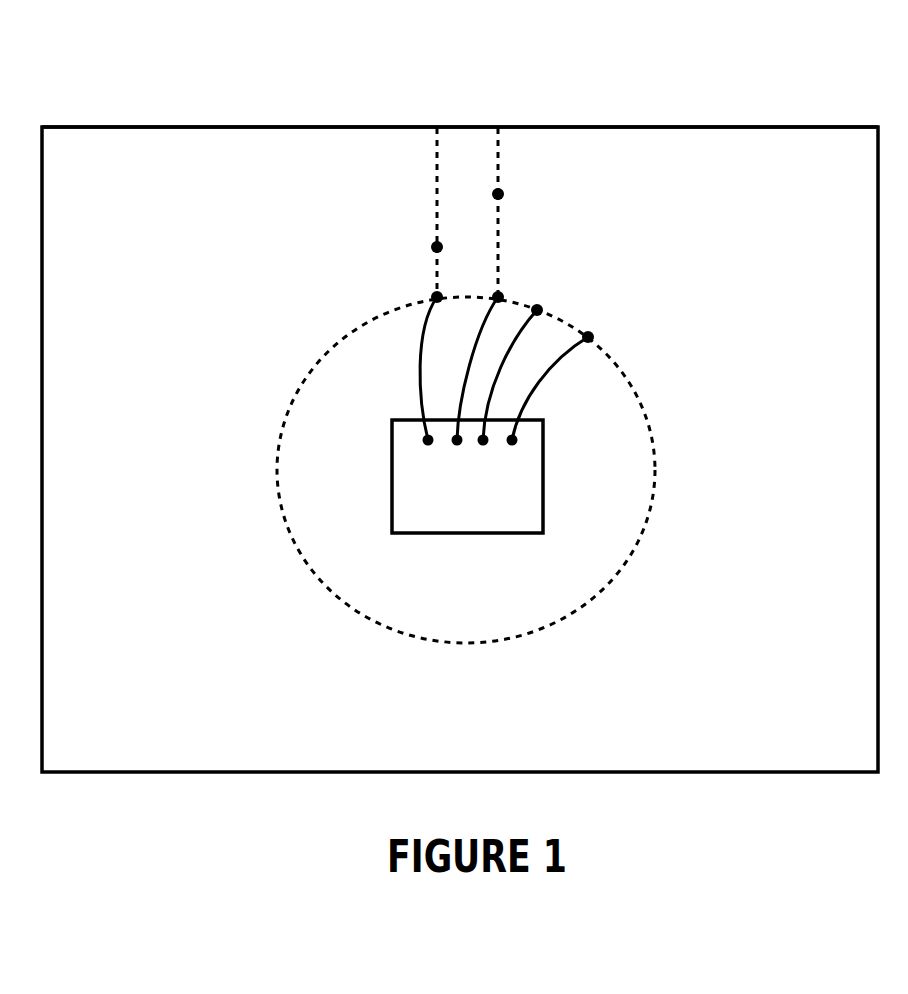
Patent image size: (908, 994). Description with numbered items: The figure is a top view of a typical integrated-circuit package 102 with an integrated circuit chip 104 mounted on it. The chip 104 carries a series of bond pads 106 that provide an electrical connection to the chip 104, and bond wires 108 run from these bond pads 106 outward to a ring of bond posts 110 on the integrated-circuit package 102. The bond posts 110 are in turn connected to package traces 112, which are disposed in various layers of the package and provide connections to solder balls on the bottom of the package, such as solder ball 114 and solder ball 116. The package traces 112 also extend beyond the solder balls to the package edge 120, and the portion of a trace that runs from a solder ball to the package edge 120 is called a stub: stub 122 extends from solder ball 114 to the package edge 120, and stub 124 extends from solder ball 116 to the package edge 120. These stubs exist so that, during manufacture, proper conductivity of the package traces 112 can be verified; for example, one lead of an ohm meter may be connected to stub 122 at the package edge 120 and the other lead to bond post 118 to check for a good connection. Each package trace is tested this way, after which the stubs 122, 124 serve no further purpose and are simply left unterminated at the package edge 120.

The integrated-circuit package 102 is at (662, 772).
The integrated circuit chip 104 is at (392, 503).
The bond pads 106 is at (467, 452).
The bond wires 108 is at (566, 369).
The bond posts 110 is at (535, 296).
The package traces 112 is at (505, 251).
The solder ball 114 is at (437, 247).
The solder ball 116 is at (498, 194).
The bond post 118 is at (437, 297).
The package edge 120 is at (477, 120).
The stub 122 is at (437, 163).
The stub 124 is at (498, 160).